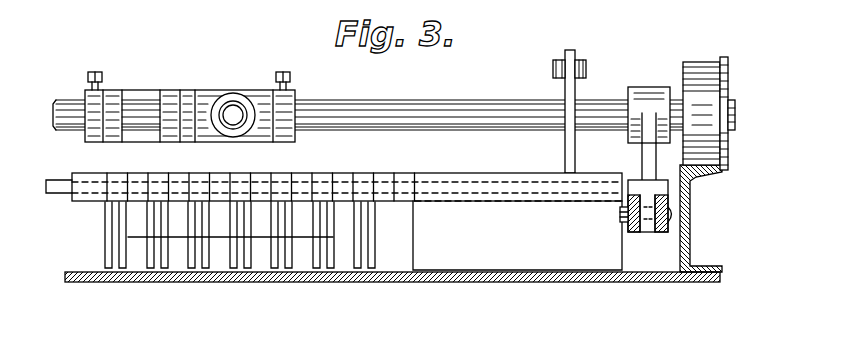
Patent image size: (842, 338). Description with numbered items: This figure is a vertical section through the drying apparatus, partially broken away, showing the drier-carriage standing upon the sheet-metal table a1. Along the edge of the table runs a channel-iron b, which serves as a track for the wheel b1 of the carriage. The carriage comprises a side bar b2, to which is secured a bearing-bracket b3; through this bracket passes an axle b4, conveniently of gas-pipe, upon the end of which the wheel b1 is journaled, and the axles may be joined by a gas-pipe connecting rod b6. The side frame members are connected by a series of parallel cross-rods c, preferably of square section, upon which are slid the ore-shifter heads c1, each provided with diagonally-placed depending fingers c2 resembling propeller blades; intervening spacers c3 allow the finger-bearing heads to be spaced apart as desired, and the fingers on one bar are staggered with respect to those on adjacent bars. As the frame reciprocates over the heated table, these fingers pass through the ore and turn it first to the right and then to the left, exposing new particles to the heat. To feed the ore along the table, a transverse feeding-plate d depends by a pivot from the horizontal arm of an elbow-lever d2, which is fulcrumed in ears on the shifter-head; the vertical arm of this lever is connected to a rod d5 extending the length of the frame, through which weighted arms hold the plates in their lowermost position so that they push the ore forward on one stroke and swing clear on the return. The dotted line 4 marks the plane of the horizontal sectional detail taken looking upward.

The sheet-metal table a1 is at (350, 283).
The channel-iron b is at (692, 218).
The wheel b1 is at (705, 70).
The side bar b2 is at (636, 233).
The bearing-bracket b3 is at (651, 95).
The axle b4 is at (478, 134).
The connecting rod b6 is at (233, 137).
The cross-rod c is at (333, 175).
The ore-shifter head c1 is at (153, 178).
The depending finger c2 is at (105, 250).
The spacer c3 is at (184, 178).
The dotted line 4 4 is at (237, 238).
The feeding-plate d is at (517, 235).
The elbow-lever d2 is at (575, 155).
The rod d5 is at (606, 47).